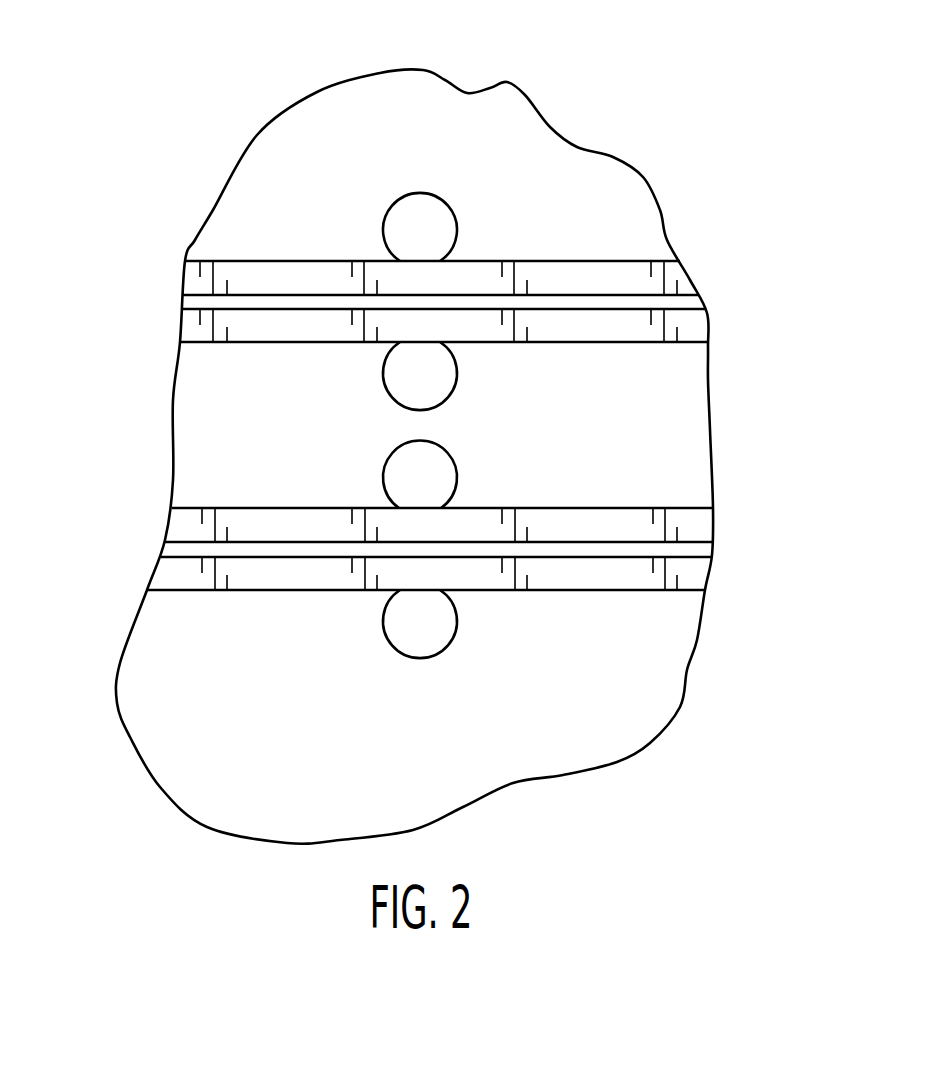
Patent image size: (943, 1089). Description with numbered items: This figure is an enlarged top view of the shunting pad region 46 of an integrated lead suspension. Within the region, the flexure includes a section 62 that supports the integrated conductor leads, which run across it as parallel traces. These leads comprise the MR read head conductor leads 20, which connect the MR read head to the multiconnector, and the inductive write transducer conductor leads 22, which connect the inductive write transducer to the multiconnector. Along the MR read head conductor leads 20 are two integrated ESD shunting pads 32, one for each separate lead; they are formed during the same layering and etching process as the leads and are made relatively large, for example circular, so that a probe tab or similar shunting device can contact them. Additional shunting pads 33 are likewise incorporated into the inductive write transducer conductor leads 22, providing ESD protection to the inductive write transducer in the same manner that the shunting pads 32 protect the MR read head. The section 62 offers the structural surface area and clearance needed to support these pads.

The shunting pad region 46 is at (232, 174).
The inductive write transducer conductor leads 22 is at (641, 259).
The MR read head conductor leads 20 is at (641, 507).
The additional shunting pads 33 is at (450, 207).
The integrated ESD shunting pads 32 is at (384, 480).
The section 62 is at (607, 698).